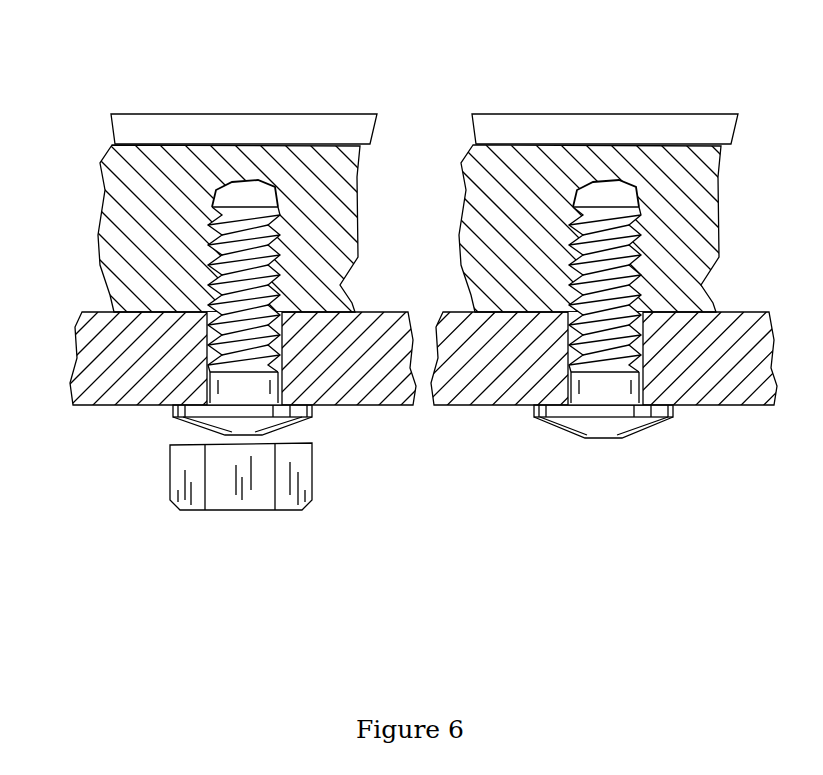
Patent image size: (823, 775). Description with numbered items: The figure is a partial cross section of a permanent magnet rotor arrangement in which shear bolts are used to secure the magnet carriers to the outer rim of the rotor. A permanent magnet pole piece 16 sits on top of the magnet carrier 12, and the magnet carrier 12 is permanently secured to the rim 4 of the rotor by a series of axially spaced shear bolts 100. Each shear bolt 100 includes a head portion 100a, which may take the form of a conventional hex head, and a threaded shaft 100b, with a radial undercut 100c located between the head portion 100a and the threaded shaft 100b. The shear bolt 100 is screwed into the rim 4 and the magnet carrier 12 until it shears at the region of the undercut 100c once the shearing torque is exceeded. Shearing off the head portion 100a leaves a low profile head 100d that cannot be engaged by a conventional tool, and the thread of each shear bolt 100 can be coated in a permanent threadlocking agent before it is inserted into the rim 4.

The rim 4 is at (115, 345).
The magnet carrier 12 is at (142, 213).
The permanent magnet pole piece 16 is at (277, 118).
The shear bolt 100 is at (185, 418).
The head portion 100a is at (242, 488).
The threaded shaft 100b is at (283, 347).
The radial undercut 100c is at (303, 432).
The low profile head 100d is at (606, 412).